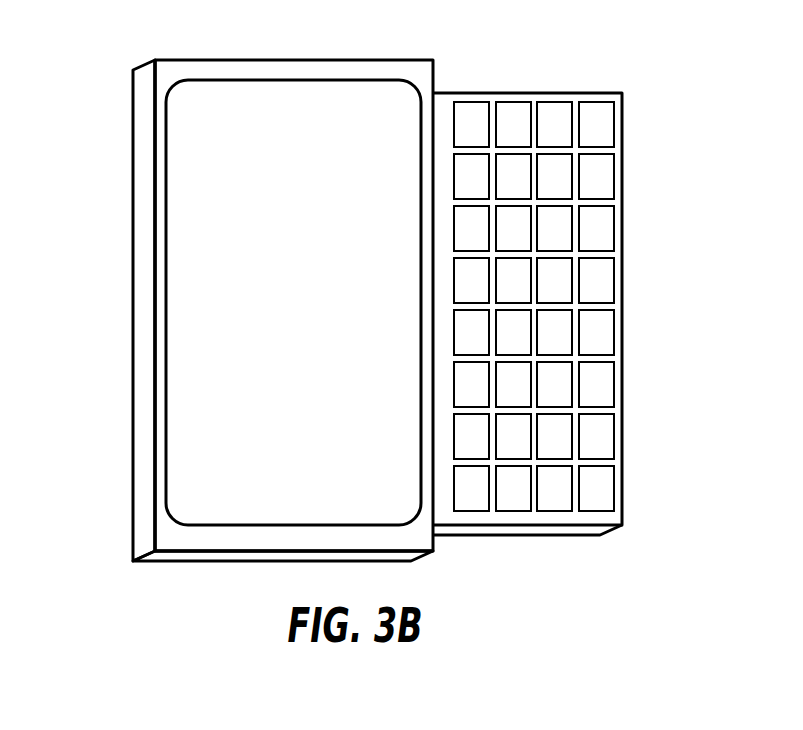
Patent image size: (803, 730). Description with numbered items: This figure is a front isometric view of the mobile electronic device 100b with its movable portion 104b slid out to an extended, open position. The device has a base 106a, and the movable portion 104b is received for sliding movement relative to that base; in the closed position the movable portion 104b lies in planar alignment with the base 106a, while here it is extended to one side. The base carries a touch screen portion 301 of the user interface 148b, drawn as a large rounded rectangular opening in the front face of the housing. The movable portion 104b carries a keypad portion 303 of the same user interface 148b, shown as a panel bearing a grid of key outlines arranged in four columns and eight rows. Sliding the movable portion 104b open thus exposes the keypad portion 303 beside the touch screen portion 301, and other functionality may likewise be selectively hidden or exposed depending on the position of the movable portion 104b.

The mobile electronic device 100b is at (153, 58).
The movable portion 104b is at (513, 92).
The touch screen portion 301 is at (200, 190).
The user interface 148b is at (166, 305).
The keypad portion 303 is at (603, 294).
The base 106a is at (436, 553).